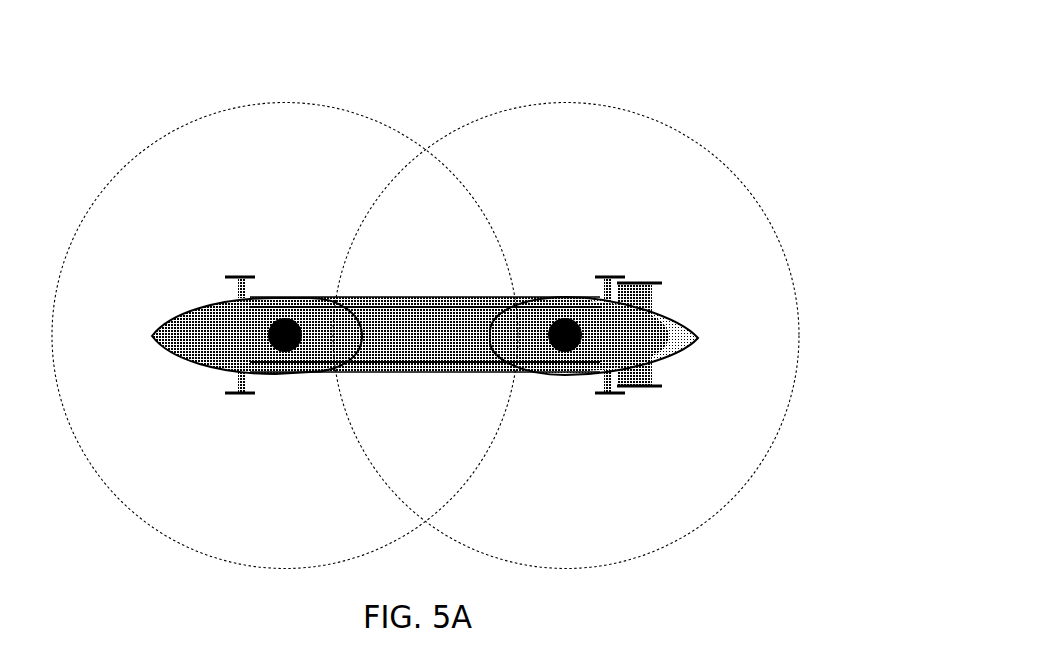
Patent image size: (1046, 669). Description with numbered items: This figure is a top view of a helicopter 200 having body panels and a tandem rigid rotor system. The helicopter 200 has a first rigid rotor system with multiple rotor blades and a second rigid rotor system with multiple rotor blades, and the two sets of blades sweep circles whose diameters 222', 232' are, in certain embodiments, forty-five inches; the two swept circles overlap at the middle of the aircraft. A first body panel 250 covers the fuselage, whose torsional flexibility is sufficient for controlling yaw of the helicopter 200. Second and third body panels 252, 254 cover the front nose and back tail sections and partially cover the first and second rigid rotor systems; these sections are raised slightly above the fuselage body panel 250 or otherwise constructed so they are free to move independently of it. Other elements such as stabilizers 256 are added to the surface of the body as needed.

The helicopter 200 is at (444, 102).
The diameter of first set of rotor blades 222' is at (270, 336).
The diameter of second set of rotor blades 232' is at (566, 321).
The first body panel 250 is at (380, 327).
The second body panel 252 is at (197, 342).
The third body panel 254 is at (673, 345).
The stabilizer 256 is at (640, 283).